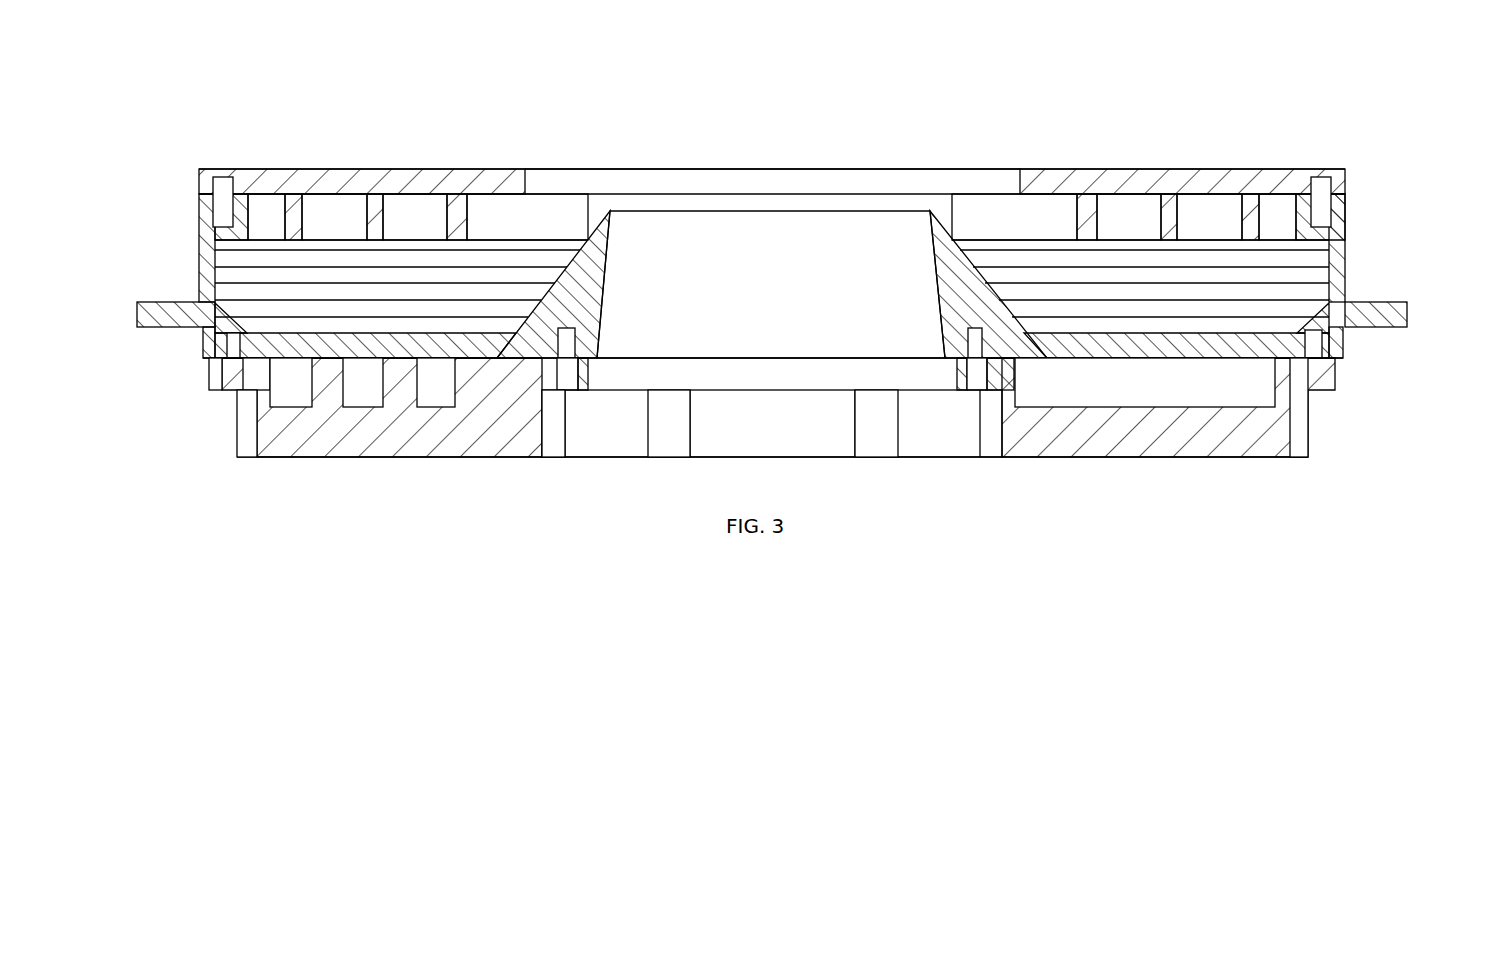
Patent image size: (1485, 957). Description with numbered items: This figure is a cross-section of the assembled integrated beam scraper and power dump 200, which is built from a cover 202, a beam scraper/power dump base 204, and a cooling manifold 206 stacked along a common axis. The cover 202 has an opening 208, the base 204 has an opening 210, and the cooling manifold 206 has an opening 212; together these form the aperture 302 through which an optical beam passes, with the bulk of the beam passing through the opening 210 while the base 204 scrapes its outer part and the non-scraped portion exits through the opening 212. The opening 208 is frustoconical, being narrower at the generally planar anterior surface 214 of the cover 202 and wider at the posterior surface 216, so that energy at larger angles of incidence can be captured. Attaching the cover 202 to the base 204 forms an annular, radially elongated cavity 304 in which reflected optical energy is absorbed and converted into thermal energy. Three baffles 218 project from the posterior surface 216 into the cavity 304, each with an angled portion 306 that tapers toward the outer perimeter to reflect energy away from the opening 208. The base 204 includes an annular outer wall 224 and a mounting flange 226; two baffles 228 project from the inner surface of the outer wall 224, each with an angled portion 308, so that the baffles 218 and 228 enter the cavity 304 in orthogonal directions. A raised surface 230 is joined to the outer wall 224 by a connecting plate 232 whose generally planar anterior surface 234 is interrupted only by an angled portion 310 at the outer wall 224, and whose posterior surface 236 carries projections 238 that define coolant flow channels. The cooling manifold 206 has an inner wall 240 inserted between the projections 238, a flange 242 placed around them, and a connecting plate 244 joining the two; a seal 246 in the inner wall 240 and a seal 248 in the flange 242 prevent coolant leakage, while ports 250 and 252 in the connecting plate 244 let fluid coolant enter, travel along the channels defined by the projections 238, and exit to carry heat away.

The integrated beam scraper and power dump 200 is at (222, 132).
The cover 202 is at (1351, 190).
The beam scraper/power dump base 204 is at (1388, 276).
The cooling manifold 206 is at (1199, 429).
The opening 208 is at (772, 140).
The opening 210 is at (661, 212).
The opening 212 is at (940, 458).
The anterior surface 214 is at (1113, 166).
The posterior surface 216 is at (1213, 191).
The baffles 218 is at (374, 212).
The outer wall 224 is at (196, 226).
The flange 226 is at (155, 334).
The baffles 228 is at (221, 264).
The raised surface 230 is at (976, 264).
The connecting plate 232 is at (1267, 346).
The anterior surface 234 is at (267, 336).
The posterior surface 236 is at (426, 362).
The projections 238 is at (327, 383).
The inner wall 240 is at (548, 392).
The flange 242 is at (218, 394).
The connecting plate 244 is at (1076, 436).
The seal 246 is at (989, 367).
The seal 248 is at (1294, 370).
The port 250 is at (670, 444).
The port 252 is at (866, 444).
The aperture 302 is at (746, 160).
The cavity 304 is at (531, 228).
The angled portion 306 is at (1091, 236).
The angled portion 308 is at (236, 296).
The angled portion 310 is at (231, 332).